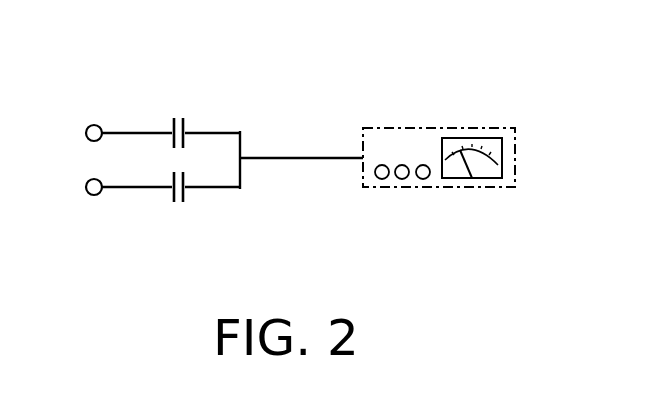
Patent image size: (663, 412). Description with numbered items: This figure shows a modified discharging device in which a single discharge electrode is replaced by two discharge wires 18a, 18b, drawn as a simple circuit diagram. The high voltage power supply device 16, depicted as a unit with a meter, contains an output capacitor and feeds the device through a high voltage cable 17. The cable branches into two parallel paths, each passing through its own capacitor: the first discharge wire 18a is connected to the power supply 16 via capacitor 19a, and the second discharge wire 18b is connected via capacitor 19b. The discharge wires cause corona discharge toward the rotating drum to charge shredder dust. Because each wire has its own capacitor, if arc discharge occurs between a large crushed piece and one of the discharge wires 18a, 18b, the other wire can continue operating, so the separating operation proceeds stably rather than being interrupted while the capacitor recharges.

The high voltage power supply device 16 is at (445, 128).
The high voltage cable 17 is at (302, 158).
The discharge wire 18a is at (94, 125).
The discharge wire 18b is at (94, 195).
The capacitor 19a is at (187, 118).
The capacitor 19b is at (185, 202).